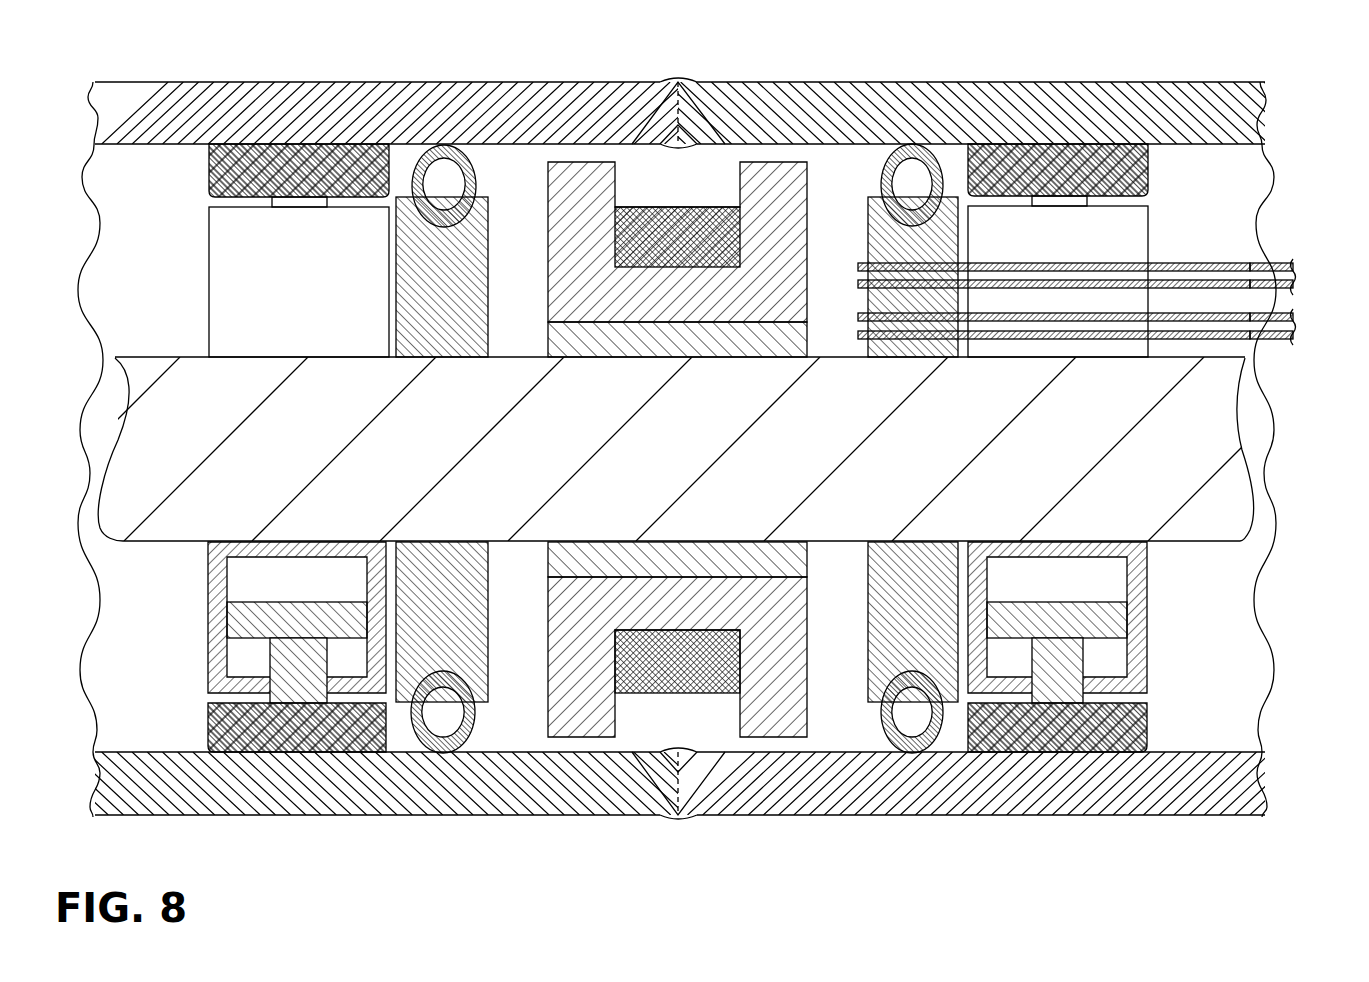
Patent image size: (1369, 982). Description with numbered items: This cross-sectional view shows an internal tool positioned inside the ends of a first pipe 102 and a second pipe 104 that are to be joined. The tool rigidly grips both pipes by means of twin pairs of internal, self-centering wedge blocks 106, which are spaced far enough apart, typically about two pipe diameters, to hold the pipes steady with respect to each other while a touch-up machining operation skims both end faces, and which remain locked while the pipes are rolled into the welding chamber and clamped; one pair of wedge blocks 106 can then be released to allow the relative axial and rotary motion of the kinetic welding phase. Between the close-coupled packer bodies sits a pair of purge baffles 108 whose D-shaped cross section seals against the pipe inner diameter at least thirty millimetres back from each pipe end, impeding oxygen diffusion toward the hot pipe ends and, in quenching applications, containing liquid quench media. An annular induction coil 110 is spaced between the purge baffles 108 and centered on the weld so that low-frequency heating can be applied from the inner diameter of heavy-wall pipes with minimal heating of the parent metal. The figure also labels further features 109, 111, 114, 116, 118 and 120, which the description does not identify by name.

The first pipe 102 is at (383, 82).
The second pipe 104 is at (1037, 82).
The wedge blocks 106 is at (208, 173).
The purge baffles 108 is at (488, 215).
The O-ring seal 109 is at (472, 146).
The annular induction coil 110 is at (640, 207).
The housing seam 111 is at (680, 82).
The first conduit 114 is at (858, 272).
The second conduit 116 is at (858, 325).
The first conduit end 118 is at (1283, 265).
The second conduit end 120 is at (1283, 340).